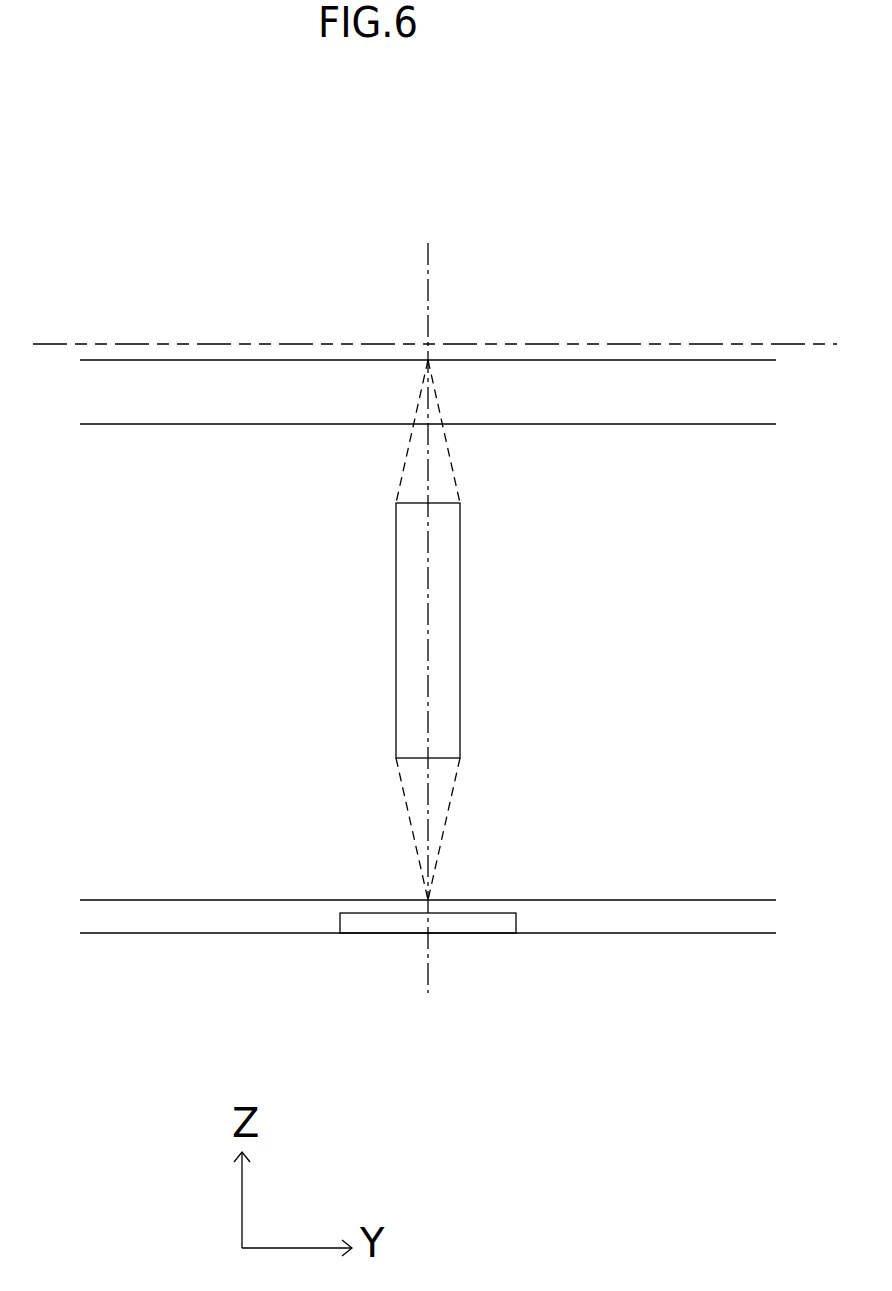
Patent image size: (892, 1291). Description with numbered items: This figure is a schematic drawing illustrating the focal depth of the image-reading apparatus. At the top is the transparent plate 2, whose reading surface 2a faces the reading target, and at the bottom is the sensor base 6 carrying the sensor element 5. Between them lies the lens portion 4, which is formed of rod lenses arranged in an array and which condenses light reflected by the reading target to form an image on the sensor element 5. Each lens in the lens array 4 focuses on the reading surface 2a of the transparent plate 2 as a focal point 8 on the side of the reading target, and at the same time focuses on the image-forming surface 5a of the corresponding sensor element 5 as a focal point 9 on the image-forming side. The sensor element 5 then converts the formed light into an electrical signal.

The reading surface 2a is at (163, 343).
The transparent plate 2 is at (542, 397).
The focal point 8 is at (427, 343).
The lens portion 4 is at (450, 662).
The sensor element 5 is at (483, 923).
The image-forming surface 5a is at (292, 899).
The sensor base 6 is at (267, 933).
The focal point 9 is at (433, 915).